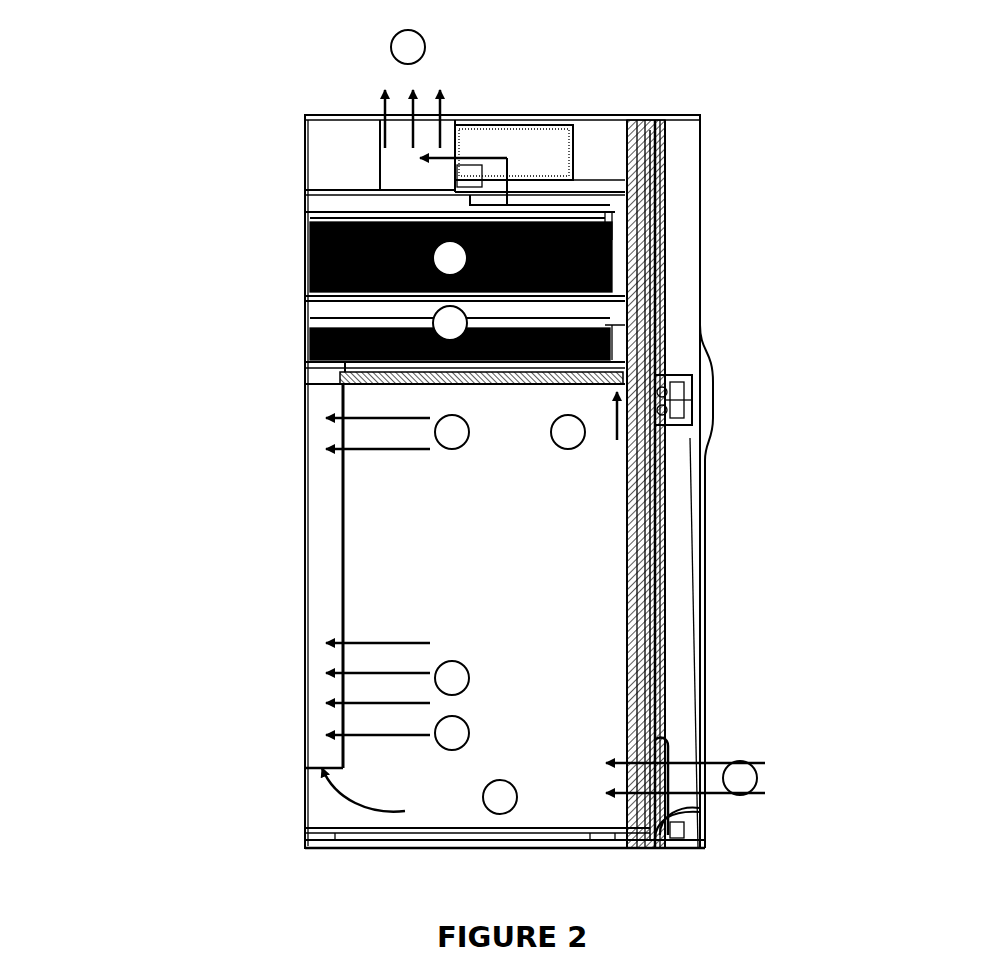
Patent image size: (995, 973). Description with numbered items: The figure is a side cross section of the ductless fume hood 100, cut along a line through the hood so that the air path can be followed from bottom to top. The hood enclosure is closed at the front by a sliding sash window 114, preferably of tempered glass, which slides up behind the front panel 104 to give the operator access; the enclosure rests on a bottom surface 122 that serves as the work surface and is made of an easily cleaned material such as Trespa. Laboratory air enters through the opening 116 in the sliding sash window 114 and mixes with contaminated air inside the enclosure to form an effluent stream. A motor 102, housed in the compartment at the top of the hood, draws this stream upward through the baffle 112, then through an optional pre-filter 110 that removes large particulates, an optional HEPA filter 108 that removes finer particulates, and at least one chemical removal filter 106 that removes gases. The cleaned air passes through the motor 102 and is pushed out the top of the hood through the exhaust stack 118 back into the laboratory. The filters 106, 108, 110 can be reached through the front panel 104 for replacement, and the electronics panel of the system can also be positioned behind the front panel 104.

The ductless fume hood 100 is at (268, 100).
The motor 102 is at (545, 138).
The front panel 104 is at (706, 263).
The chemical removal filter 106 is at (300, 263).
The high efficiency particulate air (HEPA) filter 108 is at (300, 338).
The pre-filter 110 is at (300, 372).
The baffle 112 is at (326, 660).
The sliding sash window 114 is at (660, 582).
The sash window opening 116 is at (672, 748).
The exhaust stack 118 is at (448, 108).
The bottom surface 122 is at (300, 828).